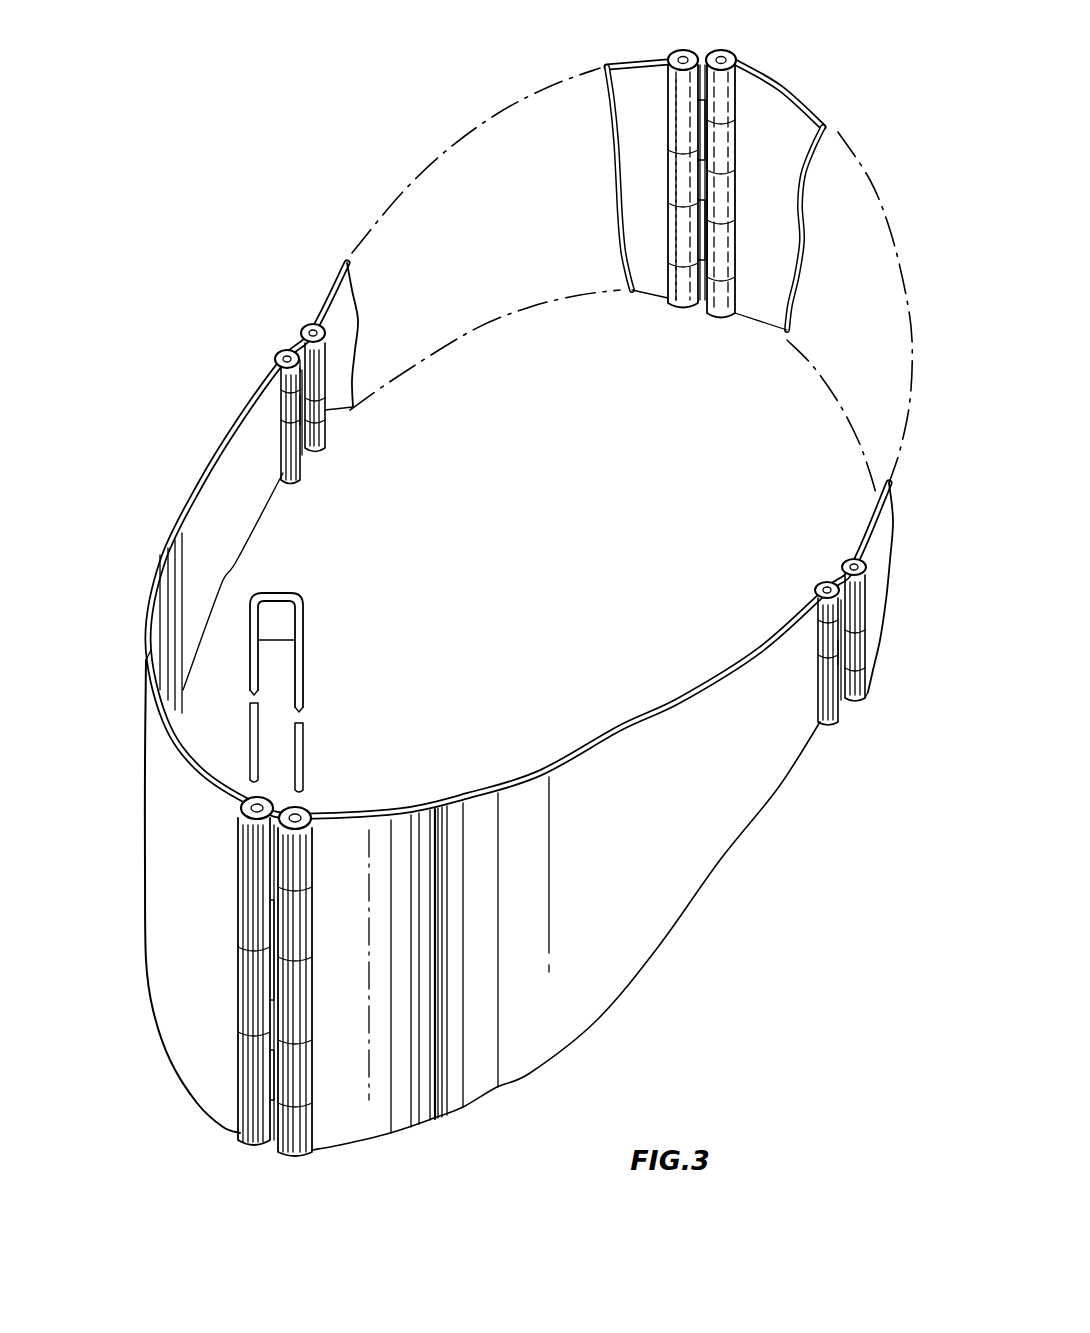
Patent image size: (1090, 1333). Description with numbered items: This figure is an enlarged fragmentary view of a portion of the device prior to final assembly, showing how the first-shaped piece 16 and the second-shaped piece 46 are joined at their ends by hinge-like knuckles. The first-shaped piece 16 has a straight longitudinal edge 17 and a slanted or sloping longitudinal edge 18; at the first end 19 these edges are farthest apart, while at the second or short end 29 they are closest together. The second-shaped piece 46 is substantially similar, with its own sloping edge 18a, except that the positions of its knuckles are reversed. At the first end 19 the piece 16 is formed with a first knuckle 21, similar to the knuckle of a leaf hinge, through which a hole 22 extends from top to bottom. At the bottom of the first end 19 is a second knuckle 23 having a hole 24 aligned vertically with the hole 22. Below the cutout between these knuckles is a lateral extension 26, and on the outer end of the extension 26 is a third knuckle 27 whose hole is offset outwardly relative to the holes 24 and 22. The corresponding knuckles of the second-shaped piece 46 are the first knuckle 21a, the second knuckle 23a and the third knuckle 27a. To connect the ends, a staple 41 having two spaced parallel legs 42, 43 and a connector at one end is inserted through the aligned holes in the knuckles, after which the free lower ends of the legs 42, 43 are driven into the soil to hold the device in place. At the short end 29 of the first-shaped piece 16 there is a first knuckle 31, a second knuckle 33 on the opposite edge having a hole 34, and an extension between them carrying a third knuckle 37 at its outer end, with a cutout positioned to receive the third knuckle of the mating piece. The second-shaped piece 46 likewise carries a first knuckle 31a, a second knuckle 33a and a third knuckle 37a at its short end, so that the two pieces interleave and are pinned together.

The first-shaped piece 16 is at (627, 80).
The straight longitudinal edge 17 is at (228, 428).
The slanted or sloping longitudinal edge 18 is at (333, 275).
The slanted or sloping longitudinal edge of second-shaped piece 18a is at (758, 73).
The first end 19 is at (165, 870).
The first knuckle 21 is at (678, 78).
The first knuckle of second-shaped piece 21a is at (302, 865).
The hole 22 is at (716, 66).
The second knuckle 23 is at (668, 268).
The second knuckle of second-shaped piece 23a is at (245, 1075).
The hole 24 is at (665, 175).
The lateral extension 26 is at (700, 138).
The third knuckle 27 is at (735, 132).
The third knuckle of second-shaped piece 27a is at (290, 1010).
The second end 29 is at (250, 530).
The first knuckle 31 is at (318, 320).
The first knuckle of second-shaped piece 31a is at (862, 600).
The second knuckle 33 is at (288, 372).
The second knuckle of second-shaped piece 33a is at (827, 592).
The hole 34 is at (282, 348).
The third knuckle 37 is at (300, 403).
The third knuckle of second-shaped piece 37a is at (820, 645).
The staple 41 is at (298, 598).
The leg 42 is at (300, 638).
The leg 43 is at (263, 657).
The second-shaped piece 46 is at (652, 943).